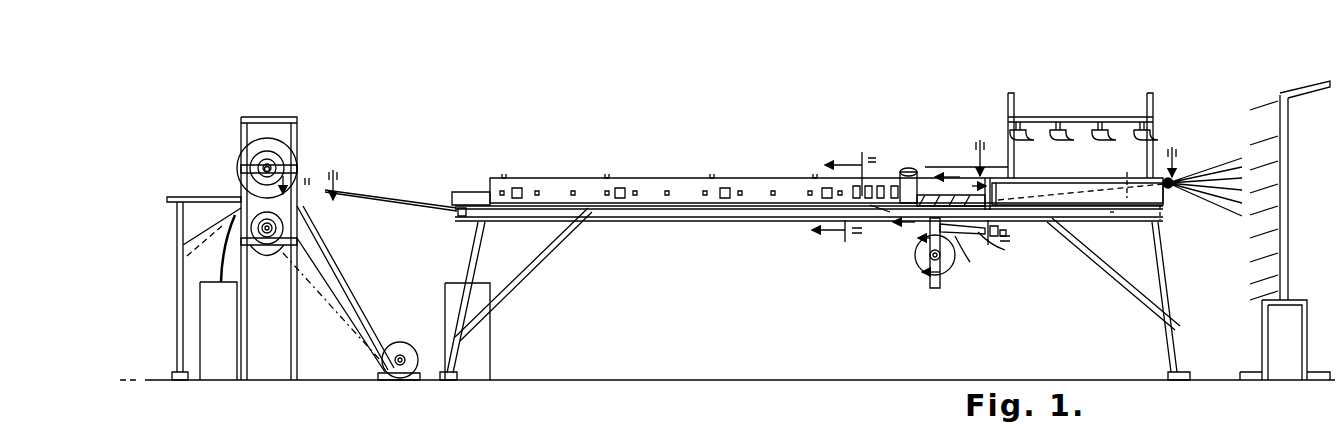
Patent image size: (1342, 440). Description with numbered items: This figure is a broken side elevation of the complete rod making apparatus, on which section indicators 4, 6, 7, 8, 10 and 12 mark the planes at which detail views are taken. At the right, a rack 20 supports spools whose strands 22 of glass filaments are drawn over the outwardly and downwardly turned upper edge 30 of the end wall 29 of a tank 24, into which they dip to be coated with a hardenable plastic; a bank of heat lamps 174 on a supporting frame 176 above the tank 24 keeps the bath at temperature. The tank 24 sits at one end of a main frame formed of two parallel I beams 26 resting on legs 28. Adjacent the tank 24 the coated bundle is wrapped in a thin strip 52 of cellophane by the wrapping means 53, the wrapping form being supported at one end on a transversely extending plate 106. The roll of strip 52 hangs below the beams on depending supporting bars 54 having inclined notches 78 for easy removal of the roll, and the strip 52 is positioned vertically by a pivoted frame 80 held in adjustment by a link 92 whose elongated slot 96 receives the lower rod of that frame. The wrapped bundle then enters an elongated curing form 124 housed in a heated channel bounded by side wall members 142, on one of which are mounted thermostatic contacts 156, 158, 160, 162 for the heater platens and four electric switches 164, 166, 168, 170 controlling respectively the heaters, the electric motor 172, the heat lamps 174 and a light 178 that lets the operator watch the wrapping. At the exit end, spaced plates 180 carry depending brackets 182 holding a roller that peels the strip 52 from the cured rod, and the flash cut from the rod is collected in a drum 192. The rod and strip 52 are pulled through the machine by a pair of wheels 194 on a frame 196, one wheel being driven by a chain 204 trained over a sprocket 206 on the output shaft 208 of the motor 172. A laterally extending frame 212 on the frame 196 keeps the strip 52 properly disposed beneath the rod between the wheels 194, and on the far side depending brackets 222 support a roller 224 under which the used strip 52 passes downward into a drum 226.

The frame 196 is at (250, 117).
The wheels 194 is at (278, 143).
The laterally extending frame 212 is at (306, 194).
The section line 12 is at (240, 186).
The depending brackets 222 is at (215, 223).
The roller 224 is at (187, 258).
The strip 52 is at (215, 270).
The drum 226 is at (200, 316).
The chain 204 is at (362, 308).
The sprocket 206 is at (398, 342).
The electric motor 172 is at (408, 352).
The output shaft 208 is at (400, 378).
The drum 192 is at (490, 350).
The legs 28 is at (468, 283).
The side wall members 142 is at (560, 182).
The plates 180 is at (470, 192).
The depending brackets 182 is at (462, 218).
The thermostatic contact 162 is at (517, 188).
The thermostatic contact 160 is at (620, 188).
The thermostatic contact 158 is at (725, 188).
The thermostatic contact 156 is at (826, 198).
The section line 10 is at (831, 198).
The curing form 124 is at (882, 212).
The electric switch 170 is at (856, 186).
The electric switch 168 is at (868, 186).
The electric switch 166 is at (880, 186).
The electric switch 164 is at (894, 186).
The light 178 is at (908, 168).
The transversely extending plate 106 is at (922, 195).
The wrapping means 53 is at (946, 186).
The section line 8 is at (921, 198).
The section line 4 is at (1064, 158).
The section line 6 is at (990, 220).
The section line 7 is at (918, 266).
The depending supporting bars 54 is at (936, 290).
The inclined notches 78 is at (913, 262).
The link 92 is at (942, 276).
The frame 80 is at (992, 246).
The elongated slot 96 is at (1006, 233).
The supporting frame 176 is at (1118, 117).
The heat lamps 174 is at (1035, 130).
The tank 24 is at (1048, 183).
The strands 22 is at (1255, 98).
The rack 20 is at (1289, 150).
The outwardly and downwardly turned upper edge 30 is at (1168, 192).
The I beams 26 is at (1115, 218).
The end wall 29 is at (1162, 220).